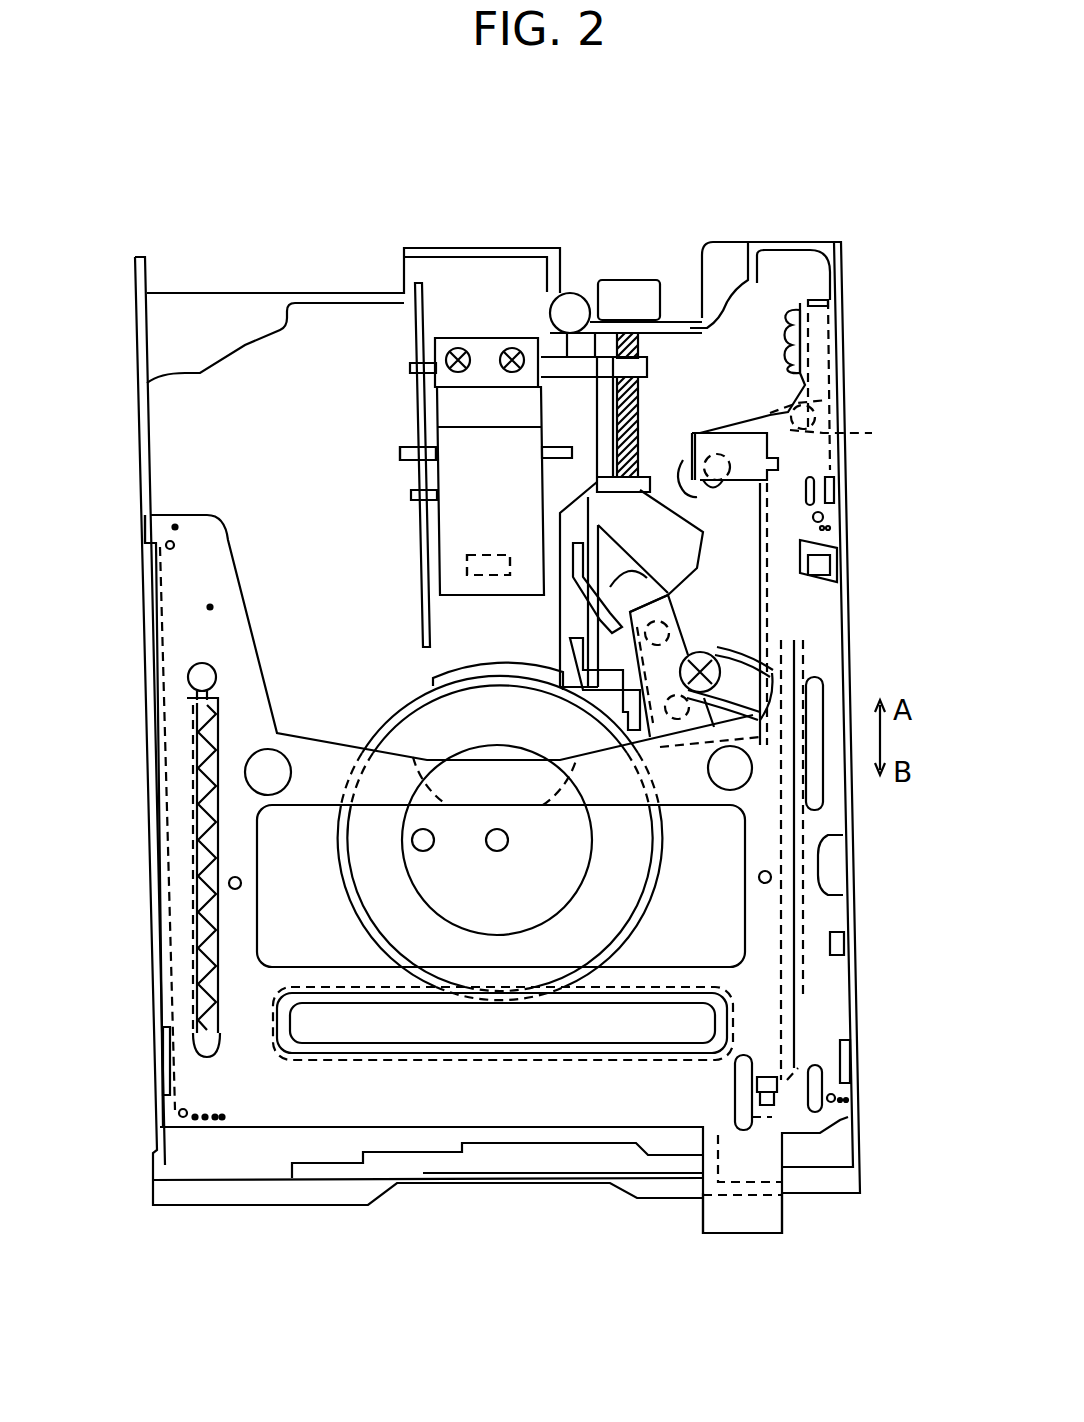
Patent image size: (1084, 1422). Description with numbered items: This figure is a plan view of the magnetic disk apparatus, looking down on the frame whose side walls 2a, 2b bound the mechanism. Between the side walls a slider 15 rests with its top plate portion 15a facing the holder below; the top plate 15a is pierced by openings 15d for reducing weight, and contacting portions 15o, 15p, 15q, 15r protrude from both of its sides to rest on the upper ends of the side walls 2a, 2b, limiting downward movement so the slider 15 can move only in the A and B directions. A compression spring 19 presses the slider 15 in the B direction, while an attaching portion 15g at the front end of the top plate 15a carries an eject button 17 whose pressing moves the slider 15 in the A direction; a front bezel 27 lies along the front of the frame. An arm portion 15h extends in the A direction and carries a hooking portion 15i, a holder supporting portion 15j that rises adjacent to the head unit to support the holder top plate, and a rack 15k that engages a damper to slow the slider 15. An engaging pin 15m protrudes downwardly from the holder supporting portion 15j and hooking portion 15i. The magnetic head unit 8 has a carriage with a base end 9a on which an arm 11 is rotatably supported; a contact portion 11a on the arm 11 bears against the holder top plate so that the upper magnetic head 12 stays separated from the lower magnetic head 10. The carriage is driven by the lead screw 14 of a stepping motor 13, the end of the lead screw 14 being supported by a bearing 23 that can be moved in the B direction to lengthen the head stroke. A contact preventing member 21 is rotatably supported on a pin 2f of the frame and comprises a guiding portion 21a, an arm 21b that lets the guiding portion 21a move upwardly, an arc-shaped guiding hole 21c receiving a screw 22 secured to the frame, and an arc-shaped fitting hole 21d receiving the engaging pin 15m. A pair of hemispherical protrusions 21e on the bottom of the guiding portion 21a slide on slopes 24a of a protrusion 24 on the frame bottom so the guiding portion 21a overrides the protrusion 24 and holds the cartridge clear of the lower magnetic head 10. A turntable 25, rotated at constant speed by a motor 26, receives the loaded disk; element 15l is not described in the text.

The side wall 2a is at (150, 890).
The side wall 2b is at (850, 884).
The pin 2f is at (815, 412).
The magnetic head unit 8 is at (396, 455).
The base end 9a is at (482, 356).
The lower magnetic head 10 is at (467, 572).
The upper magnetic head 12 is at (488, 565).
The arm 11 is at (414, 540).
The contact portion 11a is at (412, 447).
The stepping motor 13 is at (623, 297).
The lead screw 14 is at (640, 410).
The slider 15 is at (425, 1135).
The top plate portion 15a is at (556, 1110).
The openings 15d is at (303, 830).
The attaching portion 15g is at (763, 1168).
The arm portion 15h is at (790, 585).
The hooking portion 15i is at (855, 438).
The holder supporting portion 15j is at (703, 432).
The rack 15k is at (788, 340).
The spring hook 15l is at (828, 292).
The engaging pin 15m is at (763, 368).
The contacting portion 15o is at (160, 1113).
The contacting portion 15p is at (146, 530).
The contacting portion 15q is at (855, 1108).
The contacting portion 15r is at (835, 528).
The eject button 17 is at (738, 1222).
The compression spring 19 is at (220, 1008).
The contact preventing member 21 is at (740, 518).
The guiding portion 21a is at (637, 652).
The arm 21b is at (740, 570).
The guiding hole 21c is at (780, 680).
The fitting hole 21d is at (697, 498).
The hemispherical protrusions 21e is at (633, 760).
The screw 22 is at (722, 662).
The bearing 23 is at (628, 483).
The protrusion 24 is at (548, 637).
The slopes 24a is at (627, 583).
The turntable 25 is at (558, 880).
The motor 26 is at (610, 920).
The front bezel 27 is at (318, 1195).